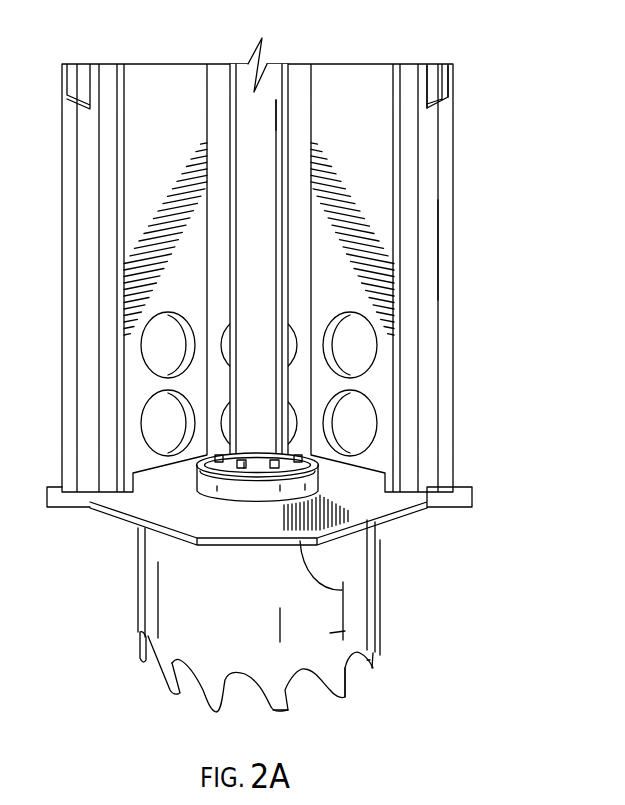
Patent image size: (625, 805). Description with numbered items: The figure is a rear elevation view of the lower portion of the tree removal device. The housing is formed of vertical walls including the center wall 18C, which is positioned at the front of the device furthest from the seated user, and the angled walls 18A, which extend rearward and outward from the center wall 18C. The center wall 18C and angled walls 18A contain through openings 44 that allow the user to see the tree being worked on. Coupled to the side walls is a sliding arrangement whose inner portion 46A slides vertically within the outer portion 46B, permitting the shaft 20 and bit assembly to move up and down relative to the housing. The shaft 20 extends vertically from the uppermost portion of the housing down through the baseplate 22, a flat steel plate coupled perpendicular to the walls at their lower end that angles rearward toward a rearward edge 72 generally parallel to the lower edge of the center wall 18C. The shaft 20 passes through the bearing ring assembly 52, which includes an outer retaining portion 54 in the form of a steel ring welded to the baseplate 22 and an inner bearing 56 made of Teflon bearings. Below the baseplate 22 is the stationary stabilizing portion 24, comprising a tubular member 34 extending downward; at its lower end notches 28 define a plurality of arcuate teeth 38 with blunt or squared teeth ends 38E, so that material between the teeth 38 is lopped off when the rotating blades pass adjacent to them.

The angled walls 18A is at (157, 120).
The center wall 18C is at (295, 118).
The shaft 20 is at (270, 267).
The baseplate 22 is at (364, 512).
The stabilizing portion 24 is at (392, 607).
The notches 28 is at (353, 668).
The tubular member 34 is at (345, 631).
The teeth 38 is at (213, 688).
The teeth ends 38E is at (287, 712).
The through openings 44 is at (160, 347).
The inner portion 46A is at (443, 78).
The outer portion 46B is at (445, 257).
The bearing ring assembly 52 is at (212, 506).
The outer retaining portion 54 is at (278, 492).
The inner bearing 56 is at (222, 500).
The rearward edge 72 is at (342, 590).